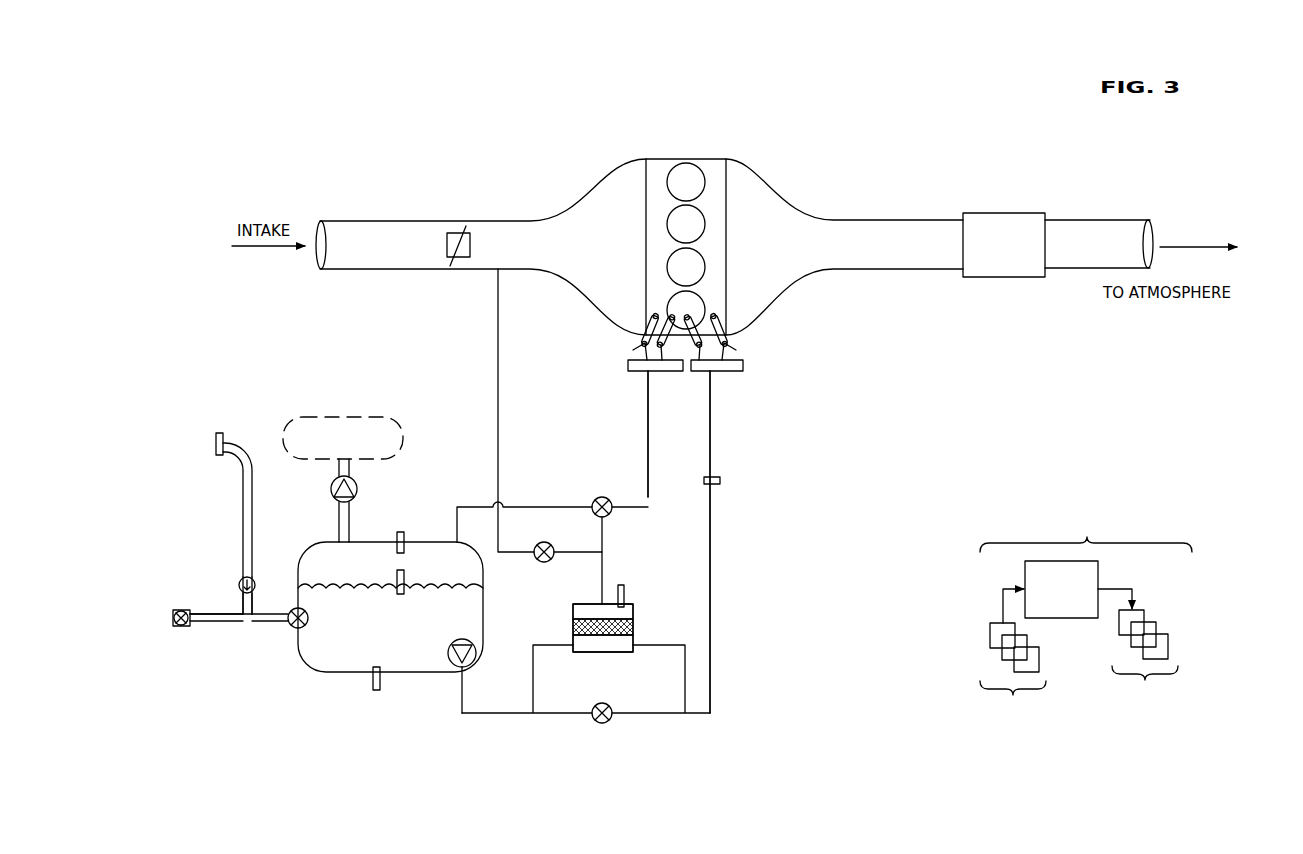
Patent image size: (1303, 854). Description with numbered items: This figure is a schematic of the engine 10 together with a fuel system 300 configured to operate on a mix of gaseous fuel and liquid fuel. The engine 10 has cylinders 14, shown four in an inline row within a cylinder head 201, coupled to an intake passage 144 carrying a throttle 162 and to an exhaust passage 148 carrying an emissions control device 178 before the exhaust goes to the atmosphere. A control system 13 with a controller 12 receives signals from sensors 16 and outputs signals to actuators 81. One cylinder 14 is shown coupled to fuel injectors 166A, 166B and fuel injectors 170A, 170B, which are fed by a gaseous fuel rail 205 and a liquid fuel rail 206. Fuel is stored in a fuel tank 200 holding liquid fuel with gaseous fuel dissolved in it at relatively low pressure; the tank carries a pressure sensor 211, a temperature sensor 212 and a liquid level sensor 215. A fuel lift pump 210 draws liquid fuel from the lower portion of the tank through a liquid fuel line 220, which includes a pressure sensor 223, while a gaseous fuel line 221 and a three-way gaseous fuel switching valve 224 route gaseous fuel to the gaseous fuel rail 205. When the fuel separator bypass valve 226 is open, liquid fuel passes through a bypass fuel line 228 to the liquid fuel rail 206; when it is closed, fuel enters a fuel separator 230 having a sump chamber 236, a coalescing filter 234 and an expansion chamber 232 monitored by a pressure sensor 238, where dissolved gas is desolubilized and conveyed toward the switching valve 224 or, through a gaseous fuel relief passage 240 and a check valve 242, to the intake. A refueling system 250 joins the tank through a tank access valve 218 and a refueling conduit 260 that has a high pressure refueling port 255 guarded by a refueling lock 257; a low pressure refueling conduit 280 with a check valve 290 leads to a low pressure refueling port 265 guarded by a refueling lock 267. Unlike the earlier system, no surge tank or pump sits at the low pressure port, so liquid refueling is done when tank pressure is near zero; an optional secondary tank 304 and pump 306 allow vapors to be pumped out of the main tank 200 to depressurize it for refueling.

The engine 10 is at (826, 128).
The controller 12 is at (1061, 589).
The control system 13 is at (1086, 525).
The cylinders 14 is at (702, 302).
The sensors 16 is at (1013, 658).
The actuators 81 is at (1141, 651).
The intake passage 144 is at (481, 247).
The exhaust passage 148 is at (844, 247).
The throttle 162 is at (470, 248).
The fuel injector 166A is at (640, 330).
The fuel injector 166B is at (728, 338).
The fuel injector 170A is at (634, 355).
The fuel injector 170B is at (740, 362).
The emissions control device 178 is at (1058, 245).
The fuel tank 200 is at (303, 660).
The cylinder head 201 is at (726, 230).
The gaseous fuel rail 205 is at (645, 372).
The liquid fuel rail 206 is at (735, 372).
The fuel lift pump 210 is at (456, 668).
The pressure sensor 211 is at (398, 532).
The temperature sensor 212 is at (372, 690).
The liquid level sensor 215 is at (406, 582).
The tank access valve 218 is at (290, 625).
The liquid fuel line 220 is at (712, 548).
The gaseous fuel line 221 is at (645, 470).
The pressure sensor 223 is at (720, 478).
The three-way gaseous fuel switching valve 224 is at (594, 500).
The fuel separator bypass valve 226 is at (598, 704).
The bypass fuel line 228 is at (672, 712).
The fuel separator 230 is at (582, 604).
The expansion chamber 232 is at (634, 609).
The coalescing filter 234 is at (634, 627).
The sump chamber 236 is at (612, 652).
The pressure sensor 238 is at (623, 585).
The gaseous fuel relief passage 240 is at (500, 437).
The check valve 242 is at (553, 559).
The refueling system 250 is at (205, 425).
The high pressure refueling port 255 is at (188, 612).
The refueling lock 257 is at (176, 627).
The refueling conduit 260 is at (220, 622).
The low pressure refueling port 265 is at (224, 437).
The refueling lock 267 is at (226, 448).
The low pressure refueling conduit 280 is at (243, 565).
The check valve 290 is at (256, 584).
The fuel system 300 is at (458, 373).
The secondary tank 304 is at (396, 445).
The pump 306 is at (332, 491).